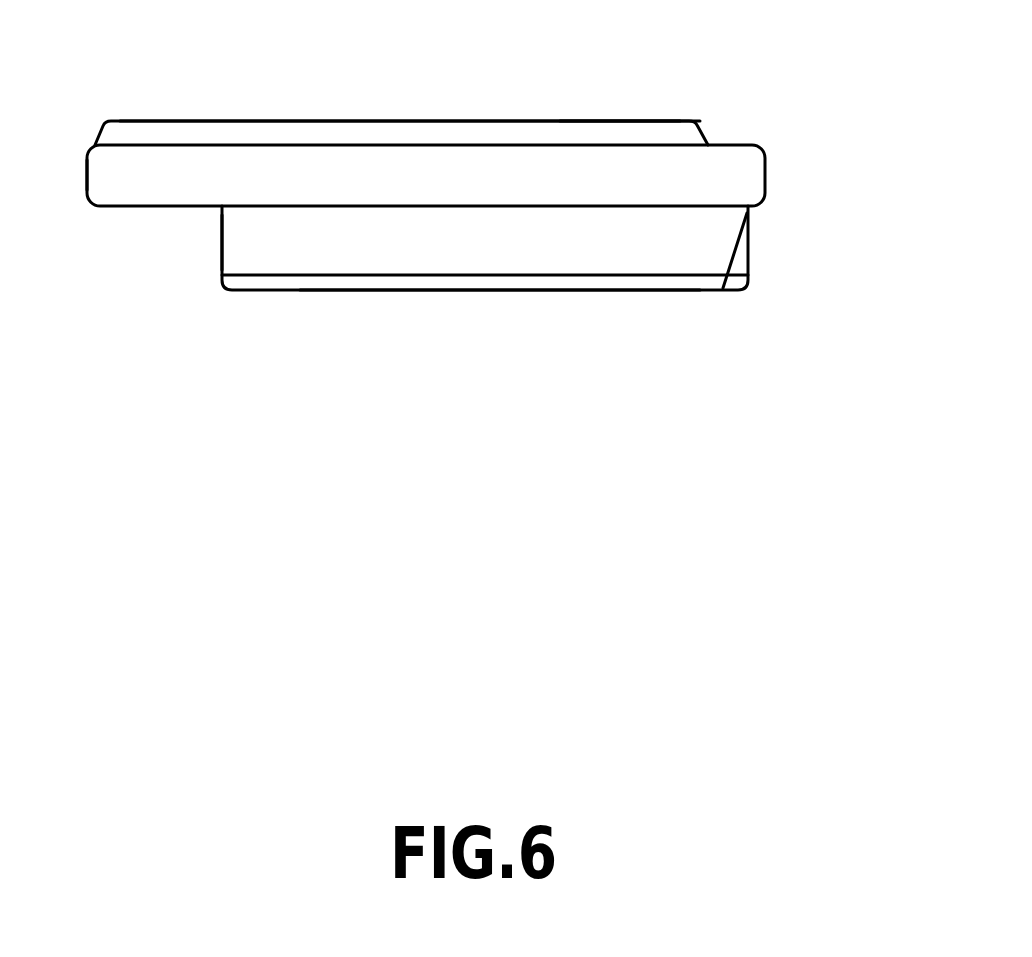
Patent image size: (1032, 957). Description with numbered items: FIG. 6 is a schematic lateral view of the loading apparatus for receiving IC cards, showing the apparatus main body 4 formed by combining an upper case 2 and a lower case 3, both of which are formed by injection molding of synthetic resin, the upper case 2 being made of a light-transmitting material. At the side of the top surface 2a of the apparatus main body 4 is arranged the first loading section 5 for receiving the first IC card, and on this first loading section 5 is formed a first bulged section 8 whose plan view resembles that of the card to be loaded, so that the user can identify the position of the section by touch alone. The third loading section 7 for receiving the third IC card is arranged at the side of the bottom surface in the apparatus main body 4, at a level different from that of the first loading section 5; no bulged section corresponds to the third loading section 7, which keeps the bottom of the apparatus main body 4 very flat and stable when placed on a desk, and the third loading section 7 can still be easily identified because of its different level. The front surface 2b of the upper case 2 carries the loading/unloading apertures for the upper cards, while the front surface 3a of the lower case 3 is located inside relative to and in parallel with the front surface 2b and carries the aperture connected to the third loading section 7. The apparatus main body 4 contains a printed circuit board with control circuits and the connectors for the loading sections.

The upper case 2 is at (740, 179).
The top surface 2a is at (380, 121).
The front surface 2b is at (86, 175).
The lower case 3 is at (740, 258).
The front surface 3a is at (221, 252).
The apparatus main body 4 is at (875, 160).
The first loading section 5 is at (594, 120).
The third loading section 7 is at (470, 292).
The first bulged section 8 is at (258, 121).